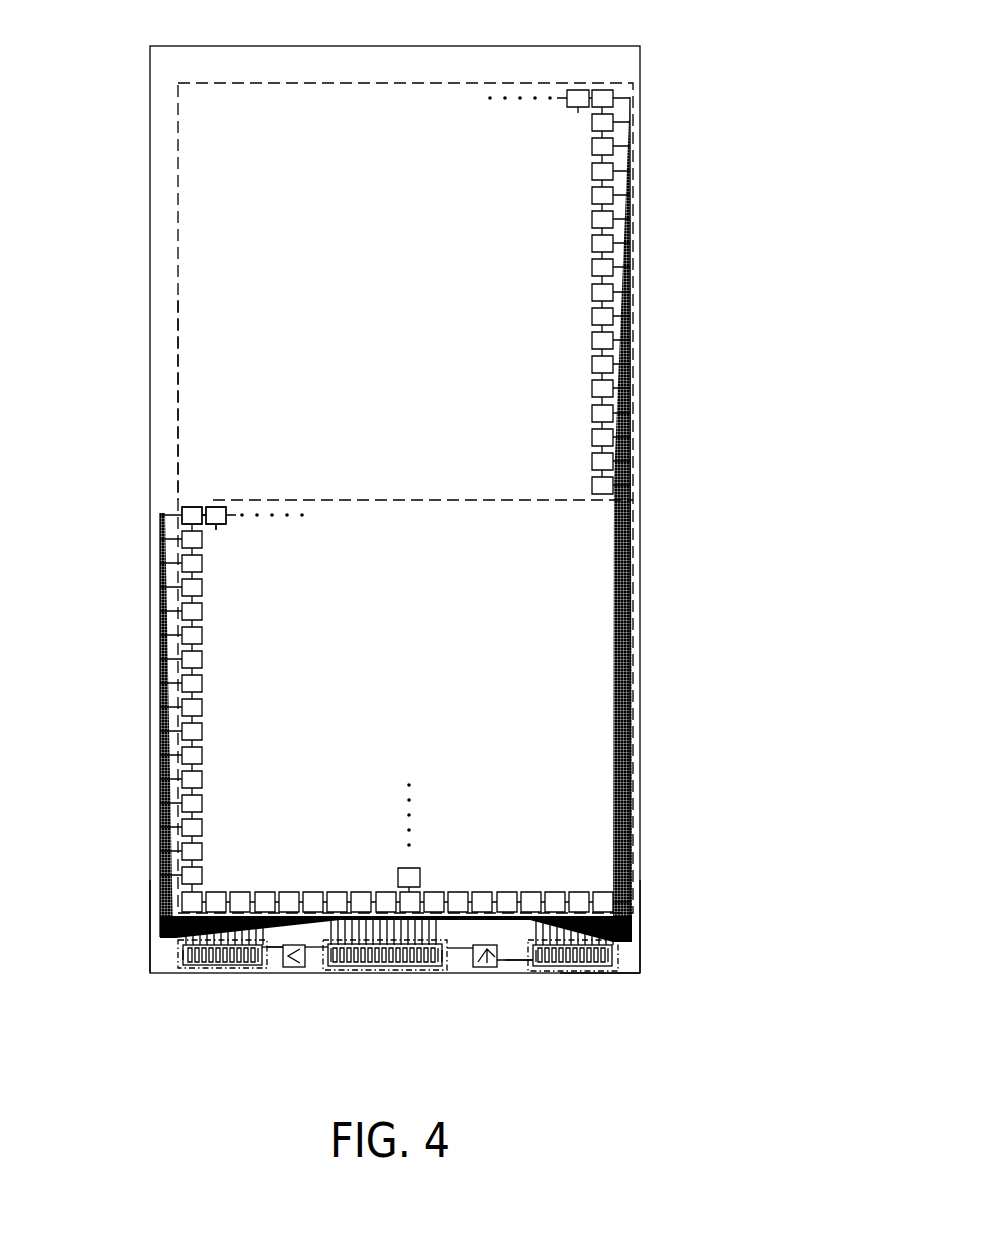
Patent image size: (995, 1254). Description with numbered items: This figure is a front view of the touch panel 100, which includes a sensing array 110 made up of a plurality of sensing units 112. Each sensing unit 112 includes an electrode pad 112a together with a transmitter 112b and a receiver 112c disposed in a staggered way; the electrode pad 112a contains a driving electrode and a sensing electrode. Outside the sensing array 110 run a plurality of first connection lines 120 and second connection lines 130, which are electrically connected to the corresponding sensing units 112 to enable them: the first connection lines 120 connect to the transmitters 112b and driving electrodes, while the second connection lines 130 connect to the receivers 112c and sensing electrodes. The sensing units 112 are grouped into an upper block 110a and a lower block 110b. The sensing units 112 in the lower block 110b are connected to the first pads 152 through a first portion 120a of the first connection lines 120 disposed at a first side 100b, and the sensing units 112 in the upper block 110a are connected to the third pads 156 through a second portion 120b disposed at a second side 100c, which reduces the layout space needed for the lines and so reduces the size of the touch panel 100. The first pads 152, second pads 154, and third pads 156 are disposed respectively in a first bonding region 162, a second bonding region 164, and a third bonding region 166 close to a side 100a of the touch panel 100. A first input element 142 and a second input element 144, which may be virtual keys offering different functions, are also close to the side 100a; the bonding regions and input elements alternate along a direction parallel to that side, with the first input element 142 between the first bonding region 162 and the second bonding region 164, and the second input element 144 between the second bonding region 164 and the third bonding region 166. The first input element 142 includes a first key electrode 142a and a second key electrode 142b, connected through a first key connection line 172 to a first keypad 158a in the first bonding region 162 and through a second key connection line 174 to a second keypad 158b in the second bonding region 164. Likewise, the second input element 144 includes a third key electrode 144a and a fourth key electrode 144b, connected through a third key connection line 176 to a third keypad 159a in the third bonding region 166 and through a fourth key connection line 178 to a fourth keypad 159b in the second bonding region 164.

The touch panel 100 is at (708, 171).
The side 100a is at (627, 976).
The first side 100b is at (147, 918).
The second side 100c is at (645, 912).
The sensing array 110 is at (47, 384).
The upper block 110a is at (212, 199).
The lower block 110b is at (212, 707).
The sensing unit 112 is at (619, 91).
The electrode pad 112a is at (210, 507).
The transmitter 112b is at (192, 507).
The receiver 112c is at (225, 507).
The first connection line 120 is at (400, 518).
The first portion 120a is at (163, 765).
The second portion 120b is at (630, 440).
The second connection line 130 is at (474, 943).
The first input element 142 is at (166, 897).
The first key electrode 142a is at (270, 946).
The second key electrode 142b is at (292, 945).
The second input element 144 is at (626, 881).
The third key electrode 144a is at (510, 960).
The fourth key electrode 144b is at (487, 945).
The first pads 152 is at (196, 968).
The second pads 154 is at (362, 970).
The third pads 156 is at (578, 970).
The first keypad 158a is at (260, 968).
The second keypad 158b is at (328, 968).
The third keypad 159a is at (537, 967).
The fourth keypad 159b is at (442, 966).
The first bonding region 162 is at (178, 953).
The second bonding region 164 is at (400, 972).
The third bonding region 166 is at (618, 962).
The first key connection line 172 is at (273, 955).
The second key connection line 174 is at (317, 955).
The third key connection line 176 is at (515, 962).
The fourth key connection line 178 is at (458, 950).